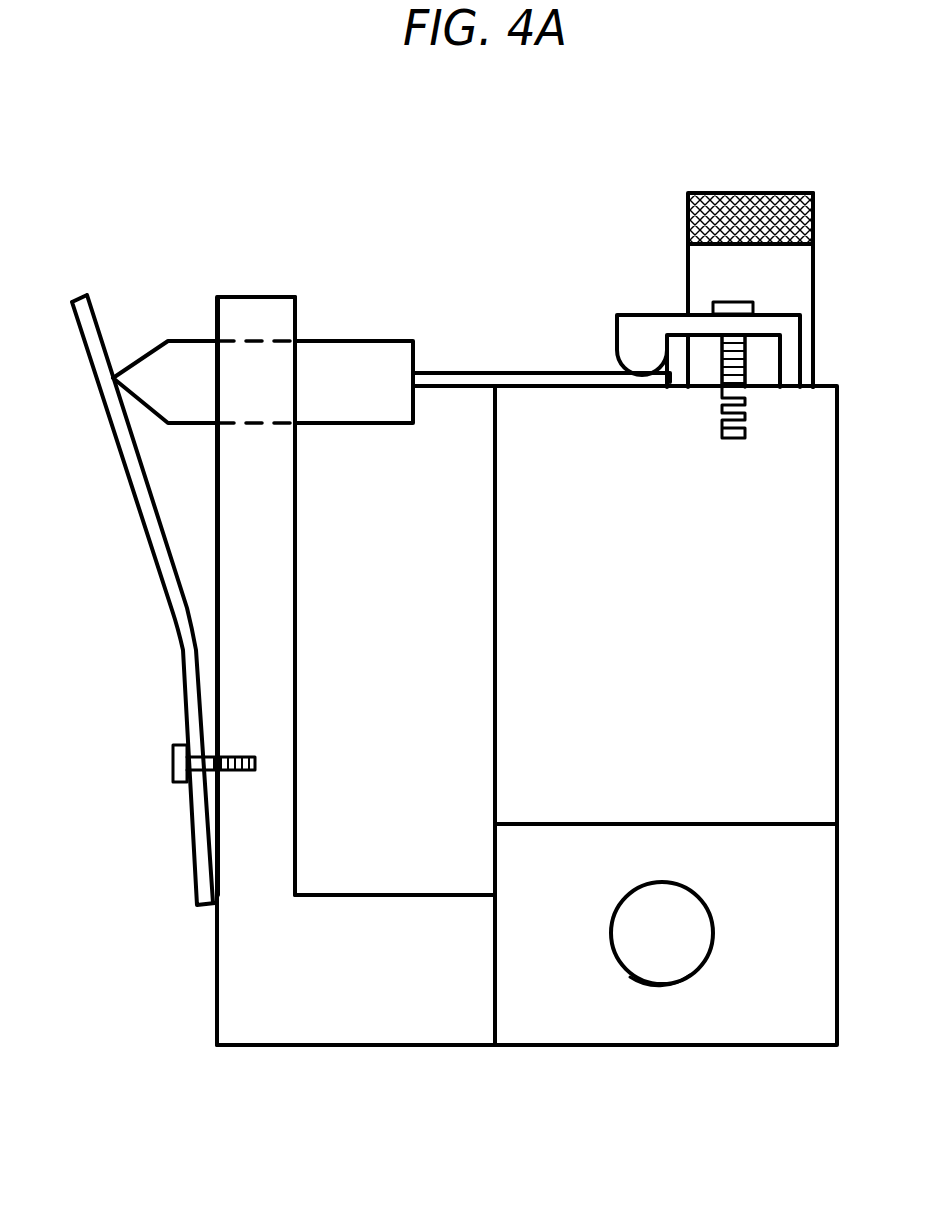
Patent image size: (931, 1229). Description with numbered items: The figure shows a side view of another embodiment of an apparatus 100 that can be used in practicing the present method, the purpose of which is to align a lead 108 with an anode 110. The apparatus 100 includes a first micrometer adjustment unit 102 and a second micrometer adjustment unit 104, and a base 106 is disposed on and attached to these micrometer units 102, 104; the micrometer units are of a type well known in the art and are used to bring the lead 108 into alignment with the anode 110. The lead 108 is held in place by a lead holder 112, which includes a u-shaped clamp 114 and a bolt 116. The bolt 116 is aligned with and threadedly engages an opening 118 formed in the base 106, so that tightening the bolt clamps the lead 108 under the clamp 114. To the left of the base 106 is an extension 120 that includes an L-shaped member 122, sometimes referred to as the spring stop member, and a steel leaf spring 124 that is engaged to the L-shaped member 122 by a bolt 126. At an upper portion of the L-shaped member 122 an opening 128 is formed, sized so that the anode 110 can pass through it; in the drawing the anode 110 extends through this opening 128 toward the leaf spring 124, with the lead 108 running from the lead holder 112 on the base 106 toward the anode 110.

The apparatus 100 is at (490, 210).
The first micrometer adjustment unit 102 is at (688, 216).
The second micrometer adjustment unit 104 is at (680, 956).
The base 106 is at (672, 568).
The lead 108 is at (470, 372).
The anode 110 is at (183, 340).
The lead holder 112 is at (778, 306).
The u-shaped clamp 114 is at (658, 314).
The bolt 116 is at (726, 302).
The opening 118 is at (748, 421).
The extension 120 is at (278, 1047).
The L-shaped member 122 is at (217, 957).
The steel leaf spring 124 is at (173, 657).
The bolt 126 is at (173, 765).
The opening 128 is at (252, 338).